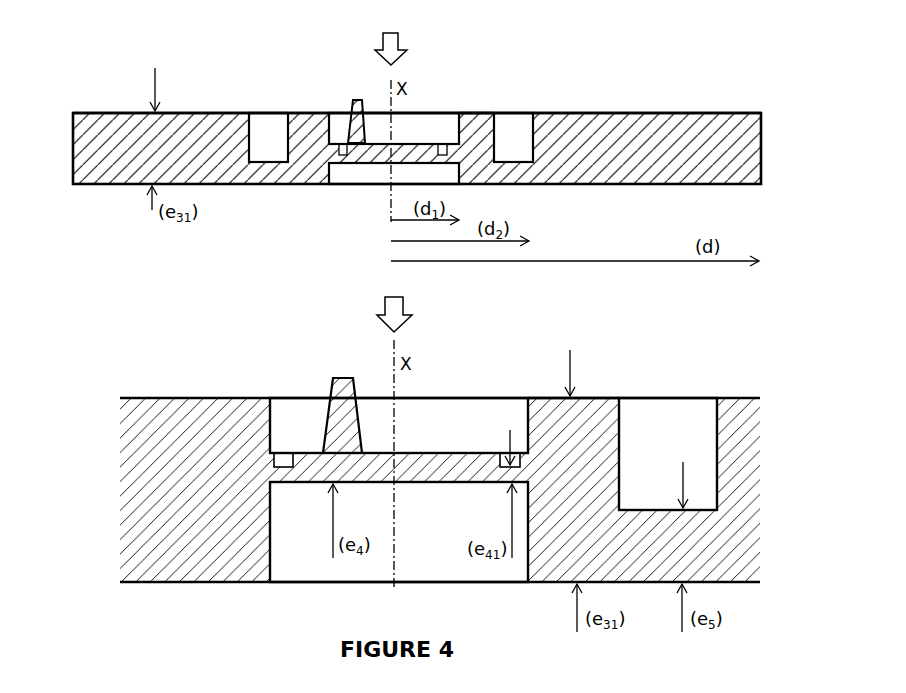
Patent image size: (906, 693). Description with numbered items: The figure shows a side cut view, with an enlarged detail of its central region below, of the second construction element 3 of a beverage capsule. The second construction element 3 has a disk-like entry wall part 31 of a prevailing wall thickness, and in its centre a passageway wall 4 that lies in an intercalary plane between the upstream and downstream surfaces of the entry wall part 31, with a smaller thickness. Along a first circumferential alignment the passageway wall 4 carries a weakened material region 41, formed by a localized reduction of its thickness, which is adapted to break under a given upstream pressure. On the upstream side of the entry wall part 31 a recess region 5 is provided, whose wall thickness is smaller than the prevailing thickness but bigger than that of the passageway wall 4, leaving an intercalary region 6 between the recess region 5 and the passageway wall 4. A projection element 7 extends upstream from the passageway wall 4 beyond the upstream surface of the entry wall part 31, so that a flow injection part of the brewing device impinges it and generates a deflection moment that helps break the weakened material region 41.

The second construction element 3 is at (409, 109).
The entry wall part 31 is at (416, 100).
The passageway wall 4 is at (378, 138).
The weakened material region 41 is at (443, 138).
The recess region 5 is at (520, 135).
The intercalary region 6 is at (474, 110).
The projection element 7 is at (346, 262).